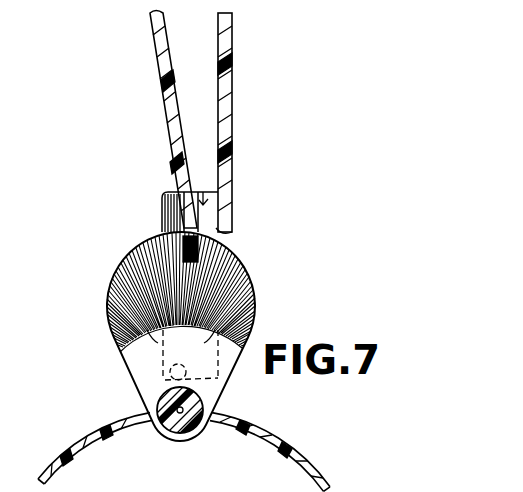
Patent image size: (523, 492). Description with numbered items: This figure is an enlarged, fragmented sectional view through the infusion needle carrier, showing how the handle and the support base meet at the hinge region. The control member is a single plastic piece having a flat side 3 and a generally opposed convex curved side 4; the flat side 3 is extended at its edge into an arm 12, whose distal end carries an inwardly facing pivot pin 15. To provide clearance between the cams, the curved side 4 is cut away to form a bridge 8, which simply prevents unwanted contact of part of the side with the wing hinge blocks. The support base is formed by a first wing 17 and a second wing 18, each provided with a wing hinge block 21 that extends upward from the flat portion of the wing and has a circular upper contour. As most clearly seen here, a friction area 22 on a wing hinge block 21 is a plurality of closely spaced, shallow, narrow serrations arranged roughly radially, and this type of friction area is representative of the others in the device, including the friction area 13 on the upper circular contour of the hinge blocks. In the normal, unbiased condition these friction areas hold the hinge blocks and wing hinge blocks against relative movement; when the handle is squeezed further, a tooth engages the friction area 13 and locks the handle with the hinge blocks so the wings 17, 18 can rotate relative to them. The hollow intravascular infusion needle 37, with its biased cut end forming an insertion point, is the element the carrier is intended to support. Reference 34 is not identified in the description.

The flat side 3 is at (218, 107).
The convex curved side 4 is at (175, 112).
The bridge 8 is at (226, 232).
The arm 12 is at (203, 195).
The friction area 13 is at (138, 247).
The pivot pin 15 is at (222, 384).
The first wing 17 is at (258, 430).
The second wing 18 is at (92, 433).
The wing hinge block 21 is at (130, 299).
The friction area 22 is at (238, 292).
The roller 34 is at (180, 441).
The hollow intravascular infusion needle 37 is at (190, 428).